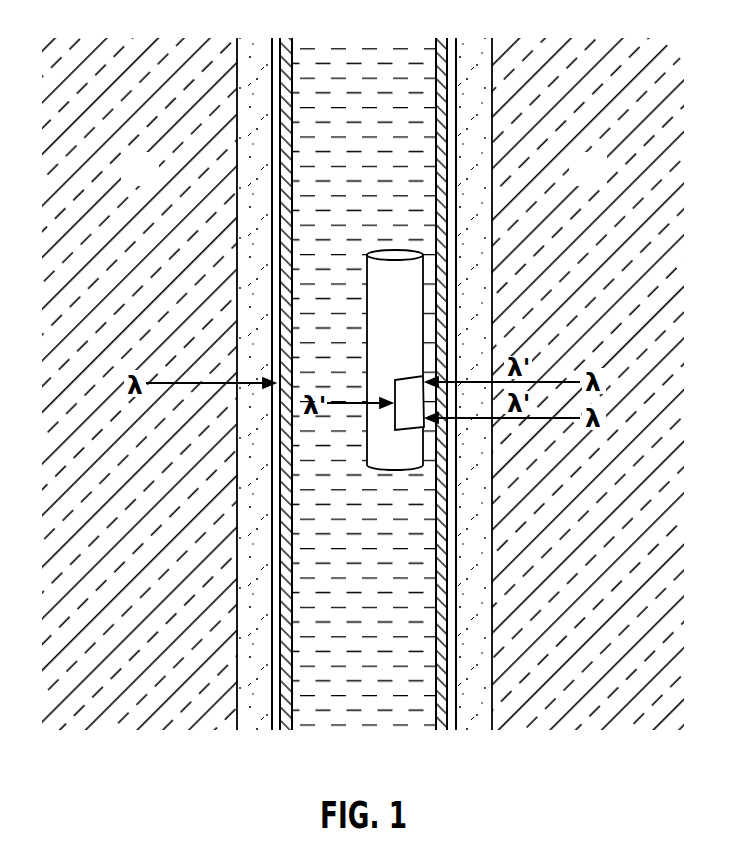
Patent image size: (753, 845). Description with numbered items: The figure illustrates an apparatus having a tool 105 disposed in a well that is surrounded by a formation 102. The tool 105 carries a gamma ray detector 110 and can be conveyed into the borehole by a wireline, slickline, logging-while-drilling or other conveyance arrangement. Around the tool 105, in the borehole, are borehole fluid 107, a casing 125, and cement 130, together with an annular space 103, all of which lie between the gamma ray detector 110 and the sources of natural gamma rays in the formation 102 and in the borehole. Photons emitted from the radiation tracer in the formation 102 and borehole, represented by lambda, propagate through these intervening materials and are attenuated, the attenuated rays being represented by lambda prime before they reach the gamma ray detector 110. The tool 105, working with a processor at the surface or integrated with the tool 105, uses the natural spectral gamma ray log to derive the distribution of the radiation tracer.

The formation 102 is at (155, 182).
The annular space 103 is at (440, 588).
The tool 105 is at (395, 250).
The borehole fluid 107 is at (352, 708).
The gamma ray detector 110 is at (408, 376).
The casing 125 is at (447, 40).
The cement 130 is at (258, 43).